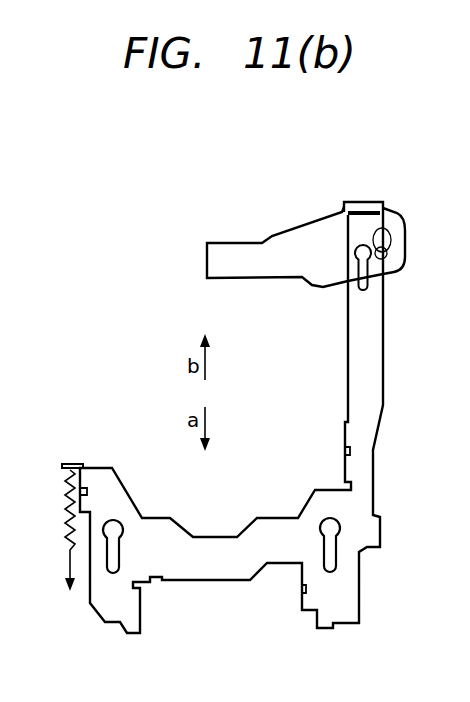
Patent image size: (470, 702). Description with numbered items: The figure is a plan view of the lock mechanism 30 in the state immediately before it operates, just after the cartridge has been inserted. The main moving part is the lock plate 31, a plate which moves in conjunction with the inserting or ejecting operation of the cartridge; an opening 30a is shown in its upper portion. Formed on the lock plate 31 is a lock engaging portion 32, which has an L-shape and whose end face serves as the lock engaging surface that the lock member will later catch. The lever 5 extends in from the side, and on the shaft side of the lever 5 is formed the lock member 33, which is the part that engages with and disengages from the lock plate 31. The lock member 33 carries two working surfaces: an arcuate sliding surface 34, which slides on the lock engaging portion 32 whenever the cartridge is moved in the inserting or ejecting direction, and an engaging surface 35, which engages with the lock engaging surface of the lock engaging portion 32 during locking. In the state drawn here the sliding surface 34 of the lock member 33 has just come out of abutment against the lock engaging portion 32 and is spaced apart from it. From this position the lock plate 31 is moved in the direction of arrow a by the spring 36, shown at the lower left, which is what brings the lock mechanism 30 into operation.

The lever 5 is at (302, 245).
The lock mechanism 30 is at (381, 228).
The keyhole slot 30a is at (357, 255).
The lock plate 31 is at (363, 390).
The lock engaging portion 32 is at (357, 203).
The lock member 33 is at (414, 256).
The sliding surface 34 is at (390, 219).
The engaging surface 35 is at (392, 227).
The spring 36 is at (65, 490).